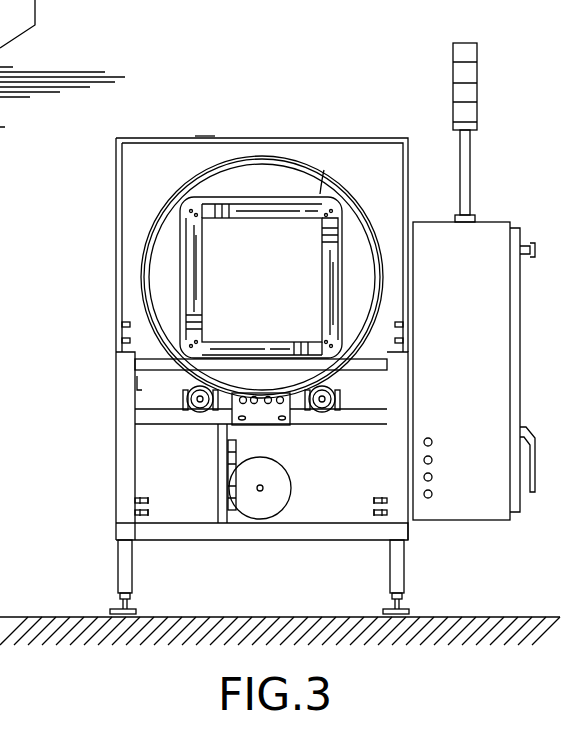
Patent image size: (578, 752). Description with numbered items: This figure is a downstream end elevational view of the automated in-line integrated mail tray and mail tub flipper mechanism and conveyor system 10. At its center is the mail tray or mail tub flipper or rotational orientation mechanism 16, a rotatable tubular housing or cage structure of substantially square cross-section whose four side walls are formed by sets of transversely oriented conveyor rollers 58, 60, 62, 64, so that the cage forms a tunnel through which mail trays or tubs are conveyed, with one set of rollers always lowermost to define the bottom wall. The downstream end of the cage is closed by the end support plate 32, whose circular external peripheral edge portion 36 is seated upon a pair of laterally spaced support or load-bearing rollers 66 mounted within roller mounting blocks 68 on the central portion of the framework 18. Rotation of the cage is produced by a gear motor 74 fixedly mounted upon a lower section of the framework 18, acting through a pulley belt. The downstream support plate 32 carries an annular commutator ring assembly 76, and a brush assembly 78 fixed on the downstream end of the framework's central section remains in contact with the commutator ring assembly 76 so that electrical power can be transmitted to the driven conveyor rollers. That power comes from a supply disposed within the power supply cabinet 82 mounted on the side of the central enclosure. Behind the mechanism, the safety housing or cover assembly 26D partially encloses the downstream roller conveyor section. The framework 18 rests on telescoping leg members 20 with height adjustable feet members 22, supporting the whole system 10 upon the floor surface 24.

The in-line integrated flipper mechanism and conveyor system 10 is at (385, 54).
The mail tray or mail tub flipper or rotational orientation mechanism 16 is at (169, 174).
The framework 18 is at (117, 485).
The telescoping leg members 20 is at (398, 573).
The height adjustable feet members 22 is at (386, 610).
The floor surface 24 is at (260, 616).
The safety housing or cover assembly 26D is at (200, 137).
The downstream end support plate 32 is at (161, 256).
The circular external peripheral edge portion 36 is at (381, 277).
The conveyor rollers 58 is at (190, 279).
The conveyor rollers 60 is at (258, 204).
The conveyor rollers 62 is at (326, 277).
The conveyor rollers 64 is at (260, 349).
The support or load-bearing rollers 66 is at (188, 390).
The roller mounting blocks 68 is at (186, 402).
The gear motor 74 is at (272, 507).
The annular commutator ring assembly 76 is at (325, 170).
The brush assembly 78 is at (248, 393).
The power supply cabinet 82 is at (476, 341).